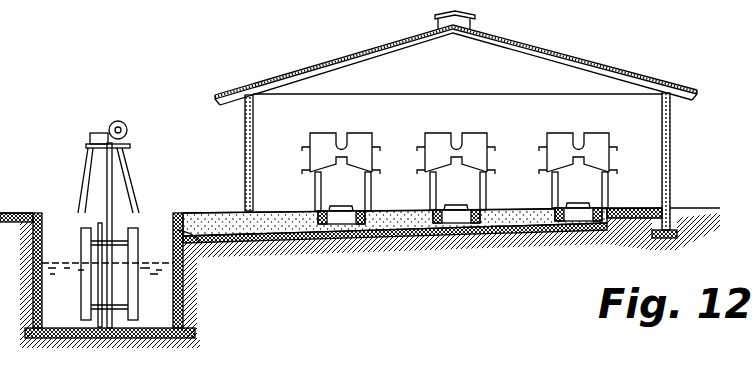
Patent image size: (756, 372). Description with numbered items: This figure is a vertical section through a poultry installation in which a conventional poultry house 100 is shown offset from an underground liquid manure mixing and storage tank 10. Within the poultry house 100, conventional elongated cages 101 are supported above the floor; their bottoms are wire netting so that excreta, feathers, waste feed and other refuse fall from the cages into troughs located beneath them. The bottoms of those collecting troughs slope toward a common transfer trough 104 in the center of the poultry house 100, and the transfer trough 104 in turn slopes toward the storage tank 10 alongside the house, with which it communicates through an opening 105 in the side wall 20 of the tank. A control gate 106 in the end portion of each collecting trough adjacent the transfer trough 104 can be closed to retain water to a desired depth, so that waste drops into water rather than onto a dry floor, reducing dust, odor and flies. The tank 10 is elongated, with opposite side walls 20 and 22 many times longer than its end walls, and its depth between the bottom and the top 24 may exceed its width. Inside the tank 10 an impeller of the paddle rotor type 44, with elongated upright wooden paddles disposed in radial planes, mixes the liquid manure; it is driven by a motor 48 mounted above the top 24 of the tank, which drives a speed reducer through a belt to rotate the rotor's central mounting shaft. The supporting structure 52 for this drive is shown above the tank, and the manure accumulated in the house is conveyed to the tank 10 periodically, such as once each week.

The liquid manure mixing and storage tank 10 is at (41, 213).
The side wall 20 is at (174, 282).
The side wall 22 is at (42, 326).
The top 24 is at (69, 213).
The paddle rotor 44 is at (138, 232).
The motor 48 is at (118, 121).
The platform 52 is at (130, 143).
The poultry house 100 is at (673, 147).
The elongated cage 101 is at (438, 137).
The transfer trough 104 is at (412, 228).
The opening 105 is at (200, 243).
The control gate 106 is at (337, 211).